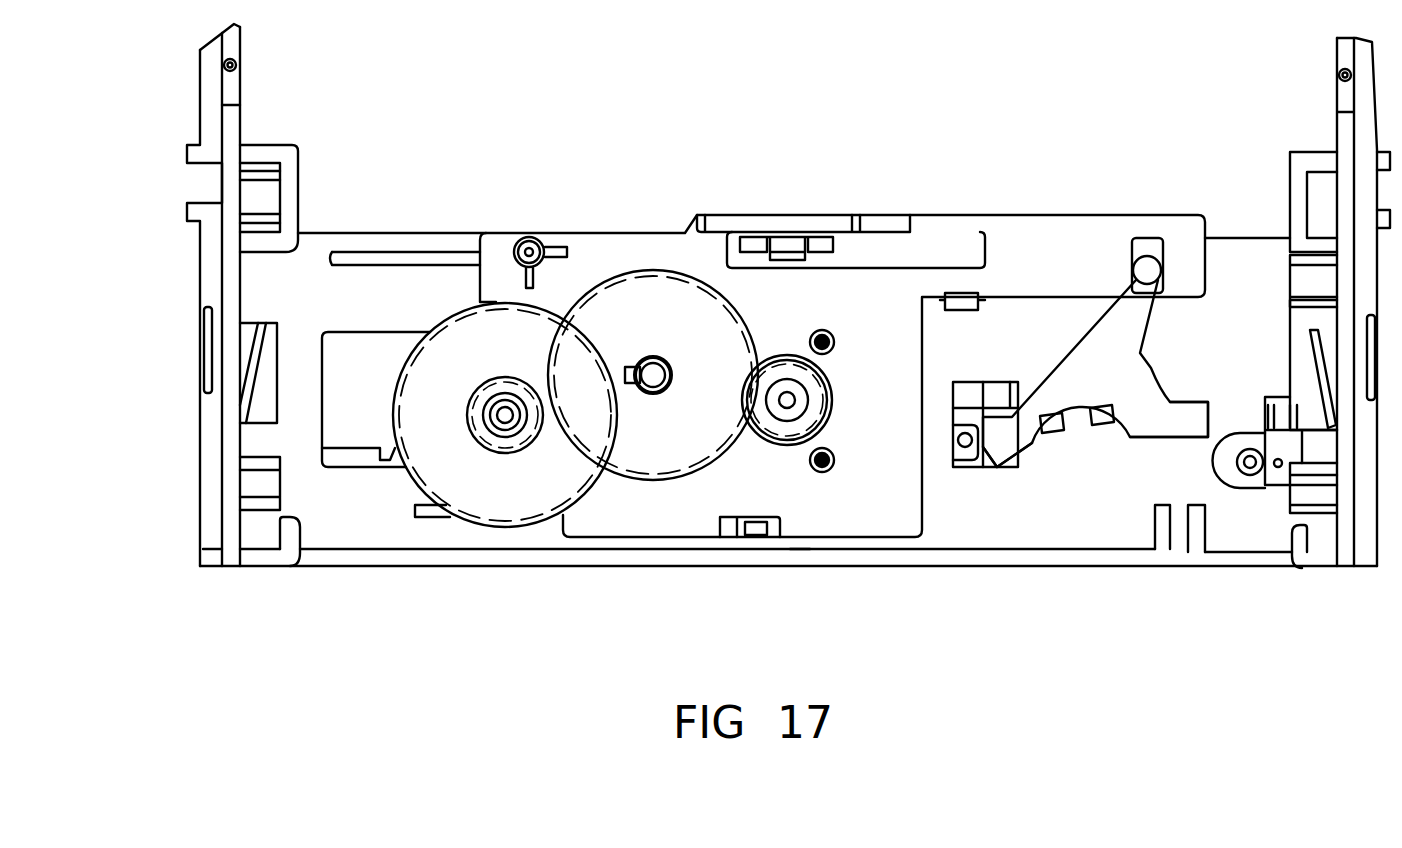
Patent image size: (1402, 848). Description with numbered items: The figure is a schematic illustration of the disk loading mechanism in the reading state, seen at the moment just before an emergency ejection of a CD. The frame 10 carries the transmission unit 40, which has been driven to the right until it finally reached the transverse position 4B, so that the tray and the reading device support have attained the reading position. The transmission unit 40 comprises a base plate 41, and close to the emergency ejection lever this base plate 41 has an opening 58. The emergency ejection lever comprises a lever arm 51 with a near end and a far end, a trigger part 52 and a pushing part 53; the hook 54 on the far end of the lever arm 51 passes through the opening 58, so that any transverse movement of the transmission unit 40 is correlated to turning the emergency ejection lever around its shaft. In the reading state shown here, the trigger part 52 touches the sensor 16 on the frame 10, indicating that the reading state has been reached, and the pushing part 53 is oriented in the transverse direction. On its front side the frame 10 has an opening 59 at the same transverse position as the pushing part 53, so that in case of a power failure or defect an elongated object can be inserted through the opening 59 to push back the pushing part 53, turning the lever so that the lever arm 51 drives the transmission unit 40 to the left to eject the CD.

The frame 10 is at (205, 265).
The base plate 41 is at (662, 250).
The transmission unit 40 is at (627, 492).
The transverse position 4B is at (800, 538).
The sensor 16 is at (1000, 445).
The lever arm 51 is at (1127, 327).
The hook 54 is at (1147, 262).
The opening 58 is at (1137, 247).
The pushing part 53 is at (1185, 420).
The trigger part 52 is at (983, 455).
The opening 59 is at (1180, 553).